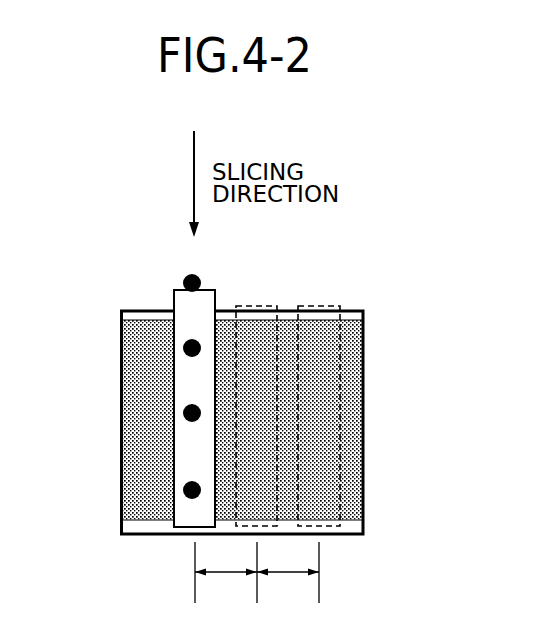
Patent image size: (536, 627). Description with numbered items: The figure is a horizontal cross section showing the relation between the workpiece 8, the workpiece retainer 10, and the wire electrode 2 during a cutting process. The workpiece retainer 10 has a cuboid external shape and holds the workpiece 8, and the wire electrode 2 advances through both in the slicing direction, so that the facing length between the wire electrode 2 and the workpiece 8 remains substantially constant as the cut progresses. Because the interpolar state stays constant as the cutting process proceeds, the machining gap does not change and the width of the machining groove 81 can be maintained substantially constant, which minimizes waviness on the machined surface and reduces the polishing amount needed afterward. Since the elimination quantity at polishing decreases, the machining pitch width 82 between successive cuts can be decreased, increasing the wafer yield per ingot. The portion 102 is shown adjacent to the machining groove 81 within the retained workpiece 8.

The wire electrode 2 is at (200, 348).
The workpiece 8 is at (353, 413).
The workpiece retainer 10 is at (355, 311).
The machining groove 81 is at (174, 394).
The machining pitch width 82 is at (257, 572).
The remaining portion 102 is at (151, 326).